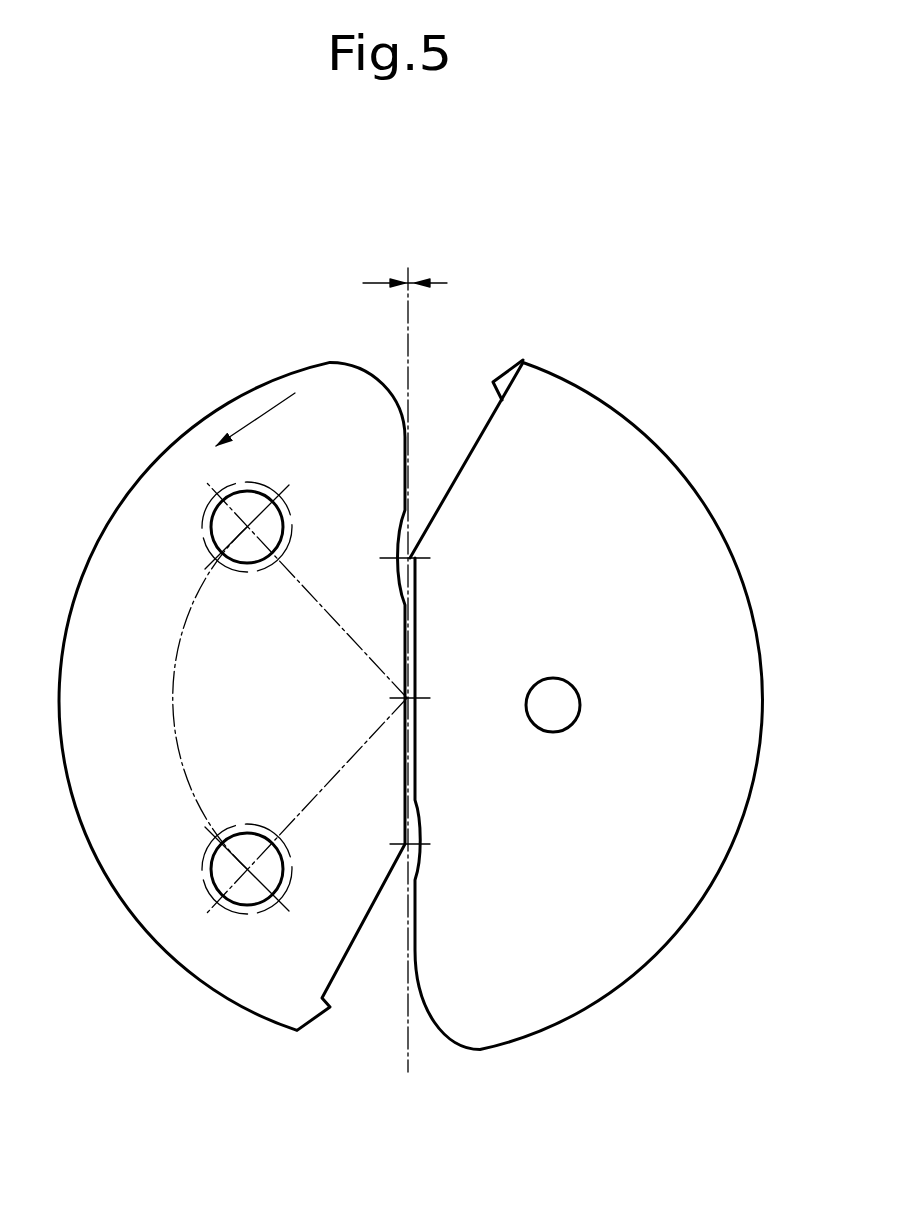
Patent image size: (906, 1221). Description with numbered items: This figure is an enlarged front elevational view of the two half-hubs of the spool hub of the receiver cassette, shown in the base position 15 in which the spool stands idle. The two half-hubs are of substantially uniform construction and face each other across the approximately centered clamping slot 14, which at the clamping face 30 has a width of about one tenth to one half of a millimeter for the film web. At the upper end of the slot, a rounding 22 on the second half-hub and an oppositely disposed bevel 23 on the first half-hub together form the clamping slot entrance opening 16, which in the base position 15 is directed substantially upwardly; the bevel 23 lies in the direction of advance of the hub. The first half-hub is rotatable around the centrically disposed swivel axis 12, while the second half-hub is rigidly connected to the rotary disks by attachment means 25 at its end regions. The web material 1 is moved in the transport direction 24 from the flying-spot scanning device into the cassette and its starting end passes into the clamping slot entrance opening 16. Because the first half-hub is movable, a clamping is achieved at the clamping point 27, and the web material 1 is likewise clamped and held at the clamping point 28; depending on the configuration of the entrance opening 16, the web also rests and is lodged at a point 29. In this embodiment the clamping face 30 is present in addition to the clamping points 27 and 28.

The web material 1 is at (457, 337).
The swivel axis 12 is at (560, 708).
The clamping slot 14 is at (727, 517).
The base position 15 is at (676, 409).
The clamping slot entrance opening 16 is at (456, 390).
The rounding 22 is at (322, 362).
The bevel 23 is at (494, 383).
The transport direction 24 is at (255, 415).
The attachment means 25 is at (247, 527).
The clamping point 27 is at (410, 845).
The clamping point 28 is at (410, 558).
The point 29 is at (524, 360).
The clamping face 30 is at (405, 635).